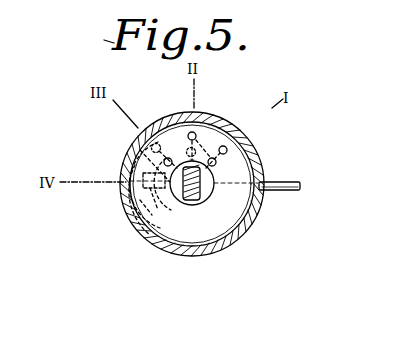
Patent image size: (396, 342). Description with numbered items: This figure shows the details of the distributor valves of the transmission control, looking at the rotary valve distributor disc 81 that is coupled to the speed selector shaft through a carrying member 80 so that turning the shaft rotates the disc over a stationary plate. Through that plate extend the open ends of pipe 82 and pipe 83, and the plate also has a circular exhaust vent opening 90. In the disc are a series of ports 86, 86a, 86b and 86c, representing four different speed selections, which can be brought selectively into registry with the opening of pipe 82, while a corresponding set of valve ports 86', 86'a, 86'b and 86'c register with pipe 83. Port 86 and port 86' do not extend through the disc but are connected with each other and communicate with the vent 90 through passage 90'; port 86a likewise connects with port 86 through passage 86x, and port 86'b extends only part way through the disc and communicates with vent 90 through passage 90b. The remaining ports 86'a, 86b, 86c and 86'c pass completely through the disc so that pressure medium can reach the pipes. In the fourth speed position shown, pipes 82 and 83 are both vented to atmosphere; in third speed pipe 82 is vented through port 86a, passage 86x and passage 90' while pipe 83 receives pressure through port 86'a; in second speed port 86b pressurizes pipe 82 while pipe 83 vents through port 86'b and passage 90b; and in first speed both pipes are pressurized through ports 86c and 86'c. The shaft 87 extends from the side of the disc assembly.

The carrying member 80 is at (211, 203).
The rotary valve distributor disc 81 is at (184, 234).
The pipe 82 is at (140, 210).
The pipe 83 is at (150, 216).
The port 86 is at (129, 188).
The valve port 86' is at (118, 224).
The port 86a is at (147, 134).
The valve port 86'a is at (126, 162).
The port 86b is at (196, 133).
The valve port 86'b is at (235, 139).
The port 86c is at (227, 150).
The valve port 86'c is at (250, 167).
The passage 86x is at (164, 162).
The shaft 87 is at (277, 191).
The vent opening 90 is at (205, 190).
The passage 90' is at (175, 184).
The passage 90b is at (236, 178).